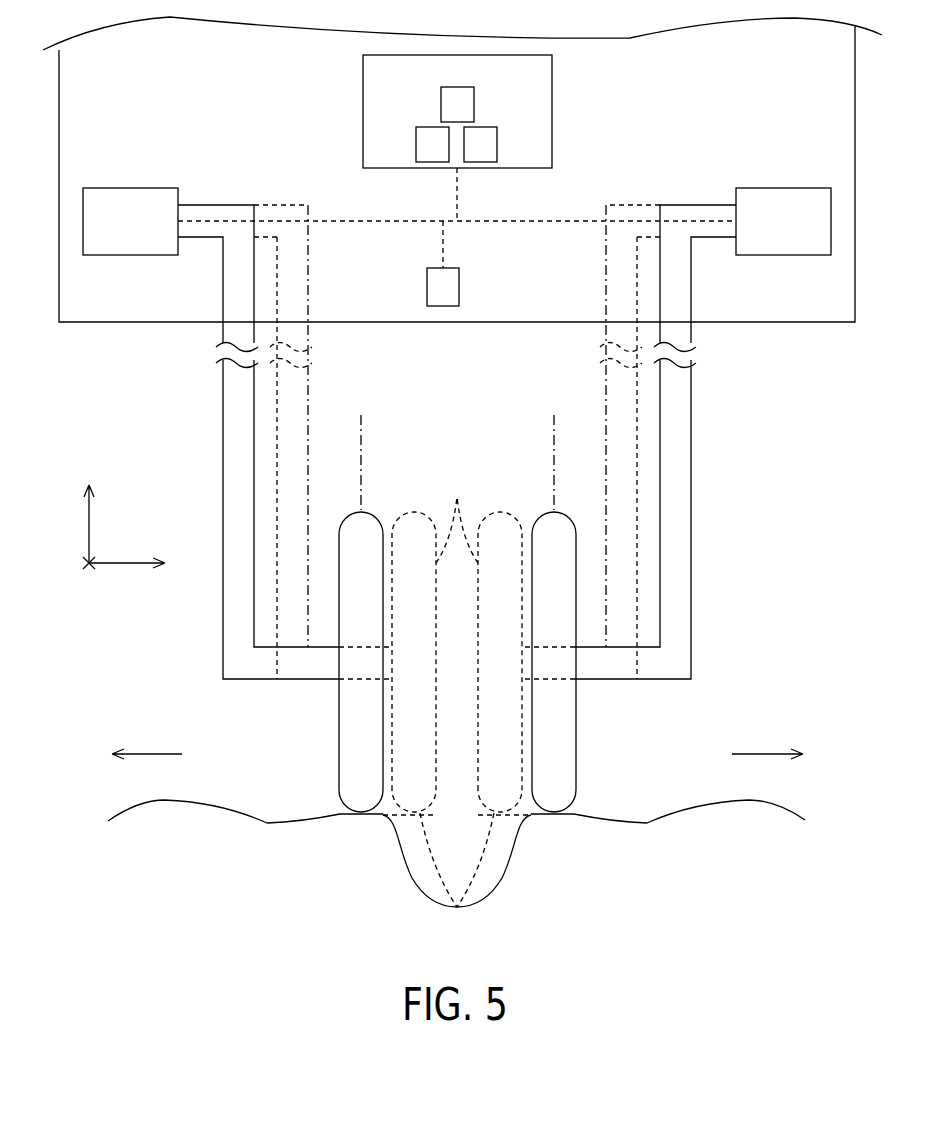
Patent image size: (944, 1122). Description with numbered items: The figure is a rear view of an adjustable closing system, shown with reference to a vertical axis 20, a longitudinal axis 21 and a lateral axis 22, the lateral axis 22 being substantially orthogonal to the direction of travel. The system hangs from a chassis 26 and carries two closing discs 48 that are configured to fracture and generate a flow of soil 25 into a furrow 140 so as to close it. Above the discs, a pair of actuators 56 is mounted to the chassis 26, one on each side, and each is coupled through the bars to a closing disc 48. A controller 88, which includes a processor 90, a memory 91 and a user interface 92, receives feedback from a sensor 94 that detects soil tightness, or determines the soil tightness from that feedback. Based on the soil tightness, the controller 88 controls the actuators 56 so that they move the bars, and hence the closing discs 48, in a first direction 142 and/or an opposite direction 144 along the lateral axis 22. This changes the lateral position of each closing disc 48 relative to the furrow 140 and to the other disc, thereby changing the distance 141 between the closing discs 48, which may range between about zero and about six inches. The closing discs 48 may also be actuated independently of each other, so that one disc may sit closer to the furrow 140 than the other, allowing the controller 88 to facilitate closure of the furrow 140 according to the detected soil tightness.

The vertical axis 20 is at (90, 530).
The longitudinal axis 21 is at (89, 563).
The lateral axis 22 is at (120, 565).
The soil 25 is at (722, 863).
The chassis 26 is at (457, 323).
The closing disc 48 is at (303, 718).
The actuator 56 is at (131, 188).
The controller 88 is at (363, 87).
The processor 90 is at (416, 147).
The memory 91 is at (497, 147).
The user interface 92 is at (474, 105).
The sensor 94 is at (459, 285).
The furrow 140 is at (419, 911).
The distance 141 is at (554, 430).
The direction 142 is at (152, 755).
The direction 144 is at (762, 755).